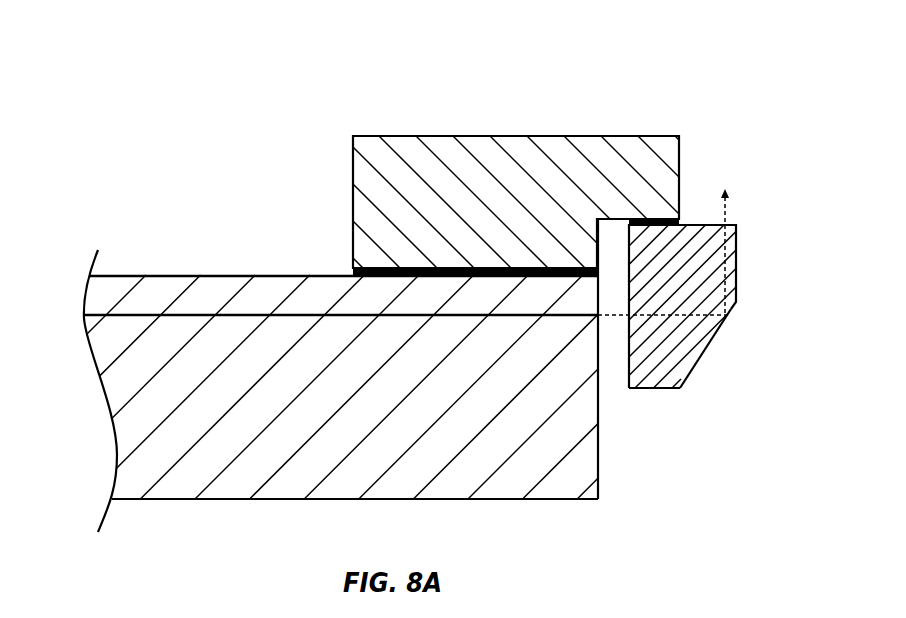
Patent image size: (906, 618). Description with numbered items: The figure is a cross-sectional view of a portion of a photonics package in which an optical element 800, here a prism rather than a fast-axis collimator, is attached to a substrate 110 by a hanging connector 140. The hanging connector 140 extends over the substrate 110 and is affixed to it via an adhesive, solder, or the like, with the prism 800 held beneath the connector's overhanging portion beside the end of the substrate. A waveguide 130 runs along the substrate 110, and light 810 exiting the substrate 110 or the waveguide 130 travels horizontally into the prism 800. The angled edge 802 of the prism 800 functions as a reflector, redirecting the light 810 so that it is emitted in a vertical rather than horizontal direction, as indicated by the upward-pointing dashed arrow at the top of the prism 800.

The substrate 110 is at (107, 410).
The waveguide 130 is at (82, 315).
The hanging connector 140 is at (506, 135).
The optical element 800 is at (736, 264).
The angled edge 802 is at (705, 350).
The light 810 is at (728, 211).